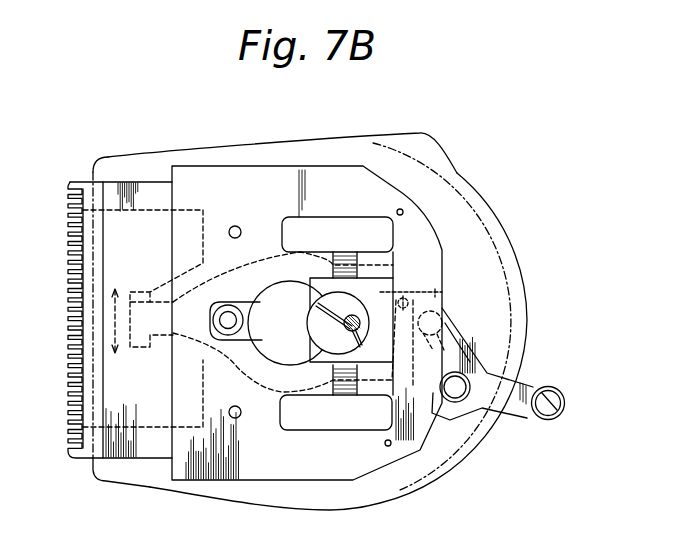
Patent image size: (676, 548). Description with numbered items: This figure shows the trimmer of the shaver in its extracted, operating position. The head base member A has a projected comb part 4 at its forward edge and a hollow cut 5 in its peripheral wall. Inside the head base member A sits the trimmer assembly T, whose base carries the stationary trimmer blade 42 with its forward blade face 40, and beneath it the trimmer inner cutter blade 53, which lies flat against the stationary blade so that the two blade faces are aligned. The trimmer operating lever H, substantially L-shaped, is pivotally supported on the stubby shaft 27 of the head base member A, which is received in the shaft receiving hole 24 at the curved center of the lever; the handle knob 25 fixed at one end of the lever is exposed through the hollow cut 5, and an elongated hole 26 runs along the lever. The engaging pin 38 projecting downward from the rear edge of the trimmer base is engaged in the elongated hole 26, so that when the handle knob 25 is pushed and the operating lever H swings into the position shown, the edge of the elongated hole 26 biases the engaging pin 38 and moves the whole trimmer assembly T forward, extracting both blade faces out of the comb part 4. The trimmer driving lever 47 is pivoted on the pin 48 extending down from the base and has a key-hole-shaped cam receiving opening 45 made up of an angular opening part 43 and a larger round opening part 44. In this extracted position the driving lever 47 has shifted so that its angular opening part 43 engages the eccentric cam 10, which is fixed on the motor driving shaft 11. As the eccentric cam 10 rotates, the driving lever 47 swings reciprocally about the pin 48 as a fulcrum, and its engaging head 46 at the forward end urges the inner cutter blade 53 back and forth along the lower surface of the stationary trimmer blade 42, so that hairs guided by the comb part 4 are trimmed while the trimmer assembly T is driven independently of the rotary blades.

The head base member A is at (213, 145).
The comb part 4 is at (96, 172).
The hollow cut 5 is at (490, 437).
The eccentric cam 10 is at (392, 286).
The driving shaft 11 is at (308, 323).
The shaft receiving hole 24 is at (483, 368).
The handle knob 25 is at (552, 412).
The elongated hole 26 is at (446, 338).
The stubby shaft 27 is at (453, 391).
The engaging pin 38 is at (433, 298).
The blade face 40 is at (82, 363).
The stationary trimmer blade 42 is at (84, 290).
The angular opening part 43 is at (376, 392).
The round opening part 44 is at (278, 353).
The cam receiving opening 45 is at (298, 288).
The engaging head 46 is at (147, 300).
The driving lever 47 is at (187, 320).
The pin 48 is at (226, 310).
The trimmer inner cutter blade 53 is at (153, 225).
The trimmer assembly T is at (390, 190).
The trimmer operating lever H is at (533, 388).